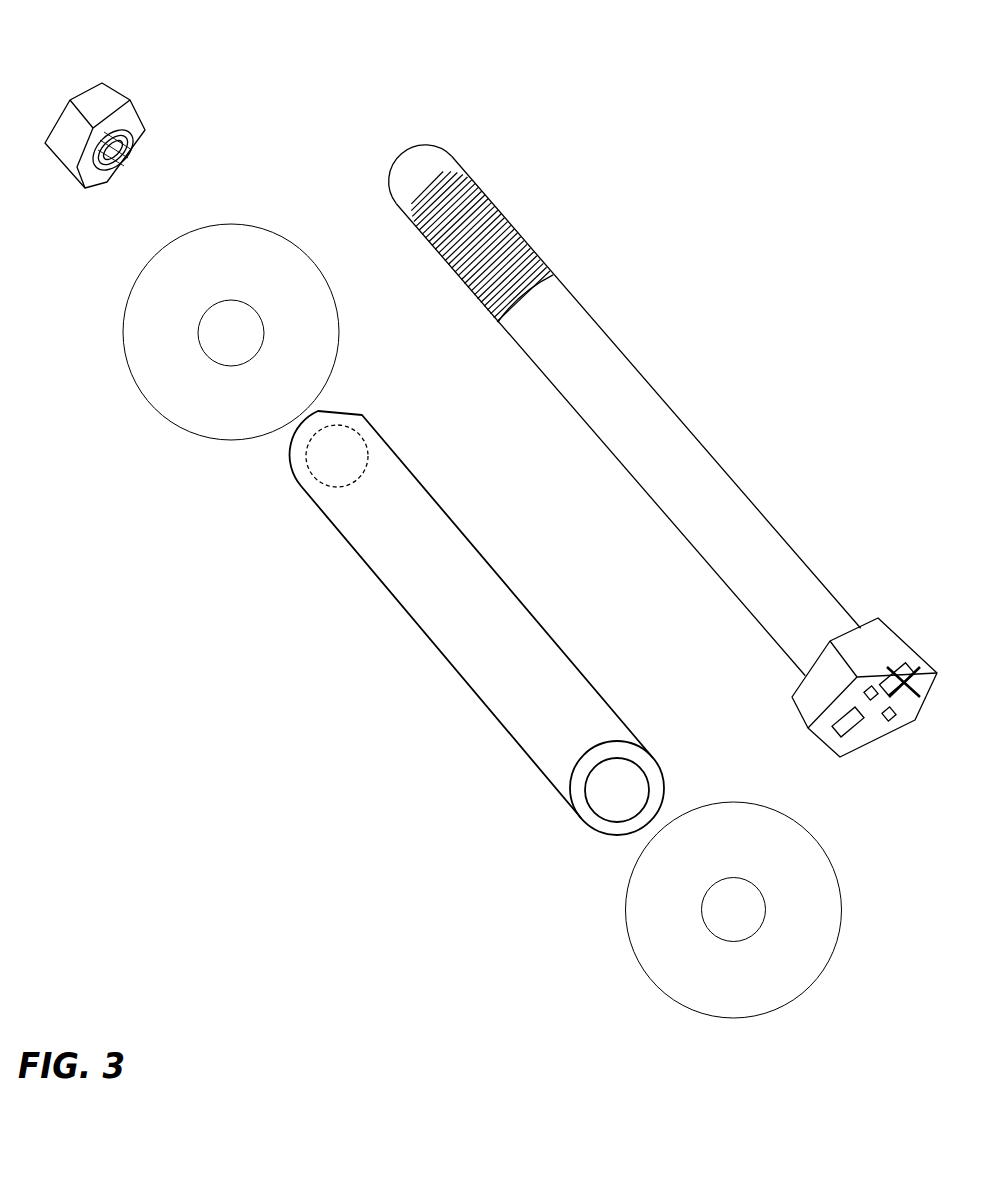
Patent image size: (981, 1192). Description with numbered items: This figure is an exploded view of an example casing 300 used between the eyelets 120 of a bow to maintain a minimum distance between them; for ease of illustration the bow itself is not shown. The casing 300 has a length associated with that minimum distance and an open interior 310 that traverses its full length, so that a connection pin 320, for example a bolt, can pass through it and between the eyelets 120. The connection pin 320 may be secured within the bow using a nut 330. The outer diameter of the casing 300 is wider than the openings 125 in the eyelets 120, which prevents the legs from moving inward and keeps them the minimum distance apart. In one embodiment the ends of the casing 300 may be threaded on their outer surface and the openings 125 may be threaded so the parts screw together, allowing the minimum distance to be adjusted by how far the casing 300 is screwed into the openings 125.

The eyelets 120 is at (230, 440).
The openings 125 is at (230, 333).
The casing 300 is at (467, 632).
The open interior 310 is at (617, 798).
The connection pin 320 is at (617, 343).
The nut 330 is at (118, 100).